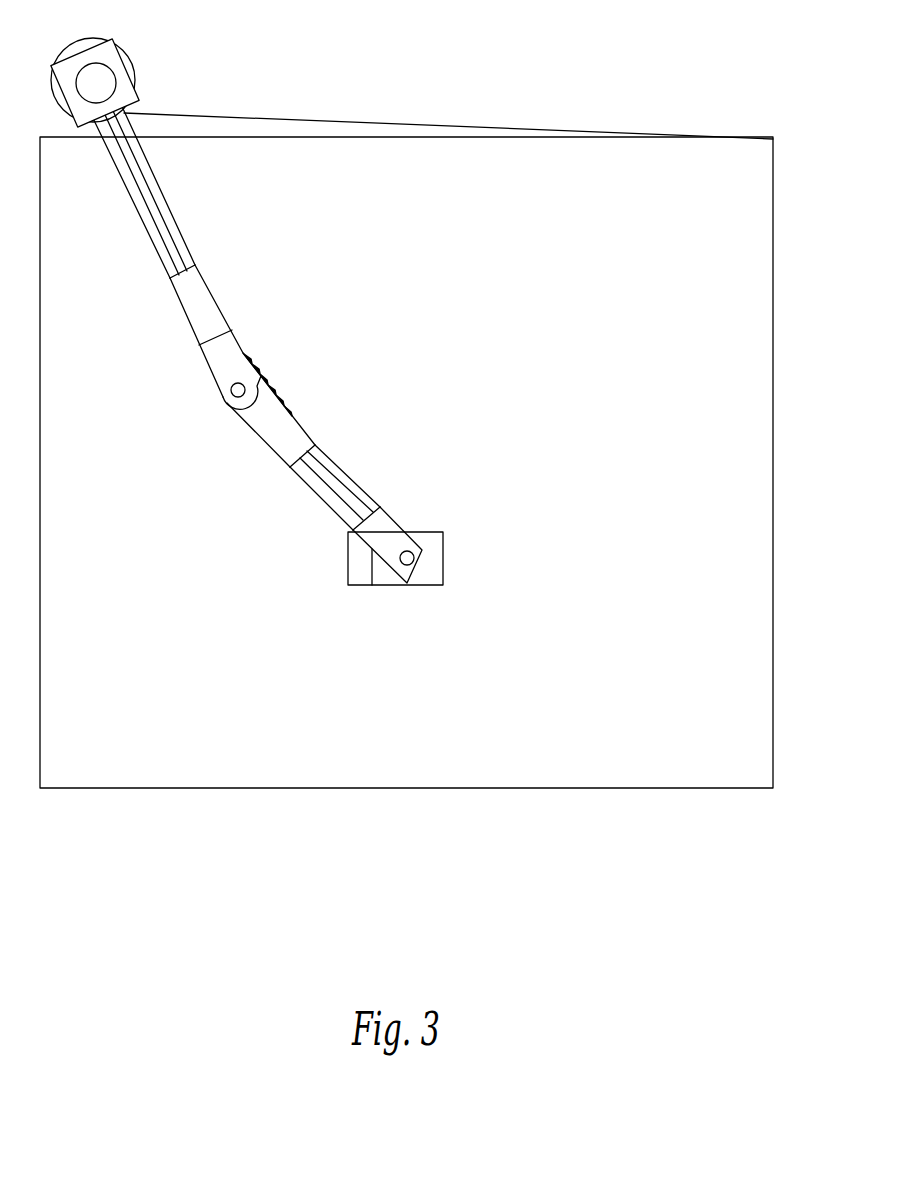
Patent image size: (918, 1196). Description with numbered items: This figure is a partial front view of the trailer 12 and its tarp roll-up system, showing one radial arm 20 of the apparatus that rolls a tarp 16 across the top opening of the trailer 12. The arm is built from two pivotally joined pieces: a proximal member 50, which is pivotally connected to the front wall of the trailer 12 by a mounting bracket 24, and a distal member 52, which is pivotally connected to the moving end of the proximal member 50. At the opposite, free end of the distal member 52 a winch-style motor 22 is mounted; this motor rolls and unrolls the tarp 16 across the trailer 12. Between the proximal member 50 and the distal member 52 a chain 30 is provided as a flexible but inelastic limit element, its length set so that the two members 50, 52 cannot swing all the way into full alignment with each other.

The trailer 12 is at (735, 223).
The tarp 16 is at (448, 127).
The front radial arm 20 is at (276, 311).
The winch-style motor 22 is at (108, 78).
The mounting bracket 24 is at (433, 540).
The chain 30 is at (265, 373).
The proximal member 50 is at (323, 455).
The distal member 52 is at (153, 172).